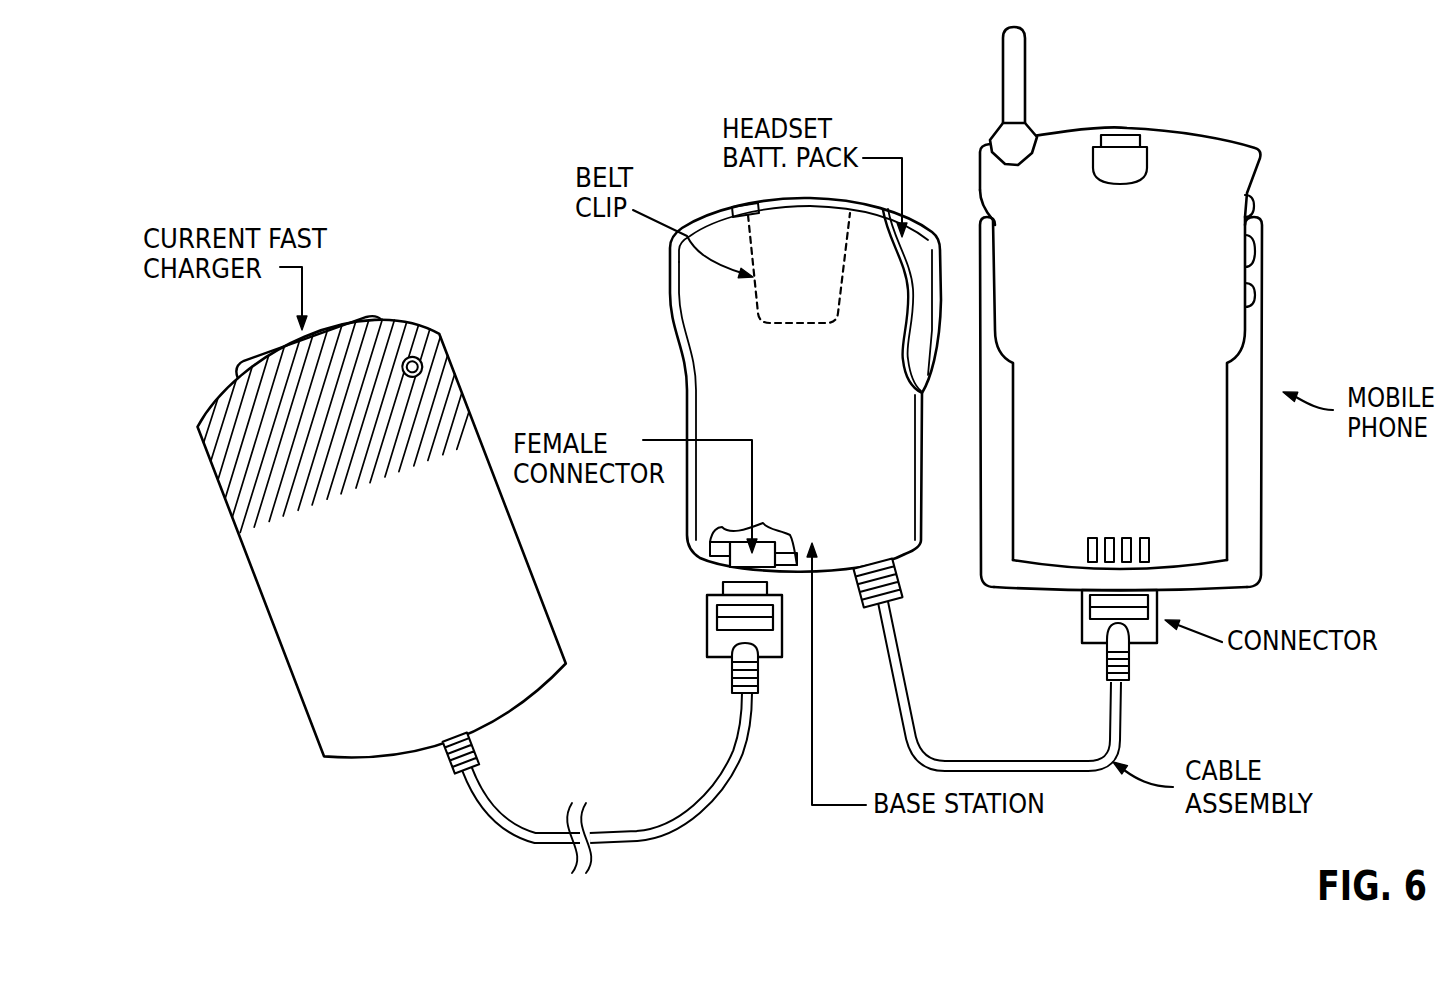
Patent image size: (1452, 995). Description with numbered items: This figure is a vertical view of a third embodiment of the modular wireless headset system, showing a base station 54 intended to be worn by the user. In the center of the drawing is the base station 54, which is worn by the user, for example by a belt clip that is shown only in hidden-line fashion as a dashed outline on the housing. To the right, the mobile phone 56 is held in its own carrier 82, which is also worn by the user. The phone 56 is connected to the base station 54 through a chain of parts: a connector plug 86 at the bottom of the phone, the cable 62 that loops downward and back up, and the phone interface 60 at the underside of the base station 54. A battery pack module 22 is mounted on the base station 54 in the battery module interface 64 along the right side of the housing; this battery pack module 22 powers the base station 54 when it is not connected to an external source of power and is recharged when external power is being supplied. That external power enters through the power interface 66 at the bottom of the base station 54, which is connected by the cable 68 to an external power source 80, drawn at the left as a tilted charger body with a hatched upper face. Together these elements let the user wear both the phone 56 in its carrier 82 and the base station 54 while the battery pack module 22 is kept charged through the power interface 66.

The battery pack module 22 is at (910, 237).
The base station 54 is at (796, 405).
The mobile phone 56 is at (1109, 297).
The phone interface 60 is at (917, 547).
The cable 62 is at (980, 760).
The battery module interface 64 is at (903, 300).
The power interface 66 is at (743, 560).
The cable 68 is at (507, 817).
The external power source 80 is at (376, 593).
The carrier 82 is at (1248, 463).
The connector plug 86 is at (1143, 637).